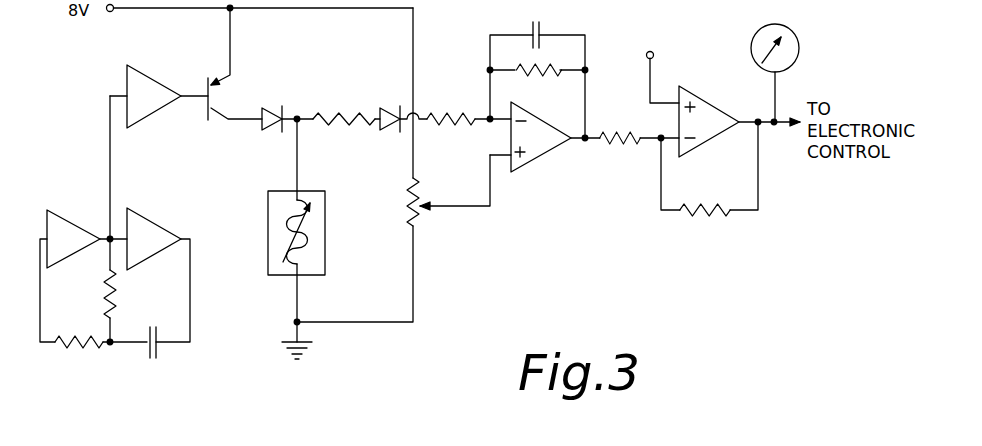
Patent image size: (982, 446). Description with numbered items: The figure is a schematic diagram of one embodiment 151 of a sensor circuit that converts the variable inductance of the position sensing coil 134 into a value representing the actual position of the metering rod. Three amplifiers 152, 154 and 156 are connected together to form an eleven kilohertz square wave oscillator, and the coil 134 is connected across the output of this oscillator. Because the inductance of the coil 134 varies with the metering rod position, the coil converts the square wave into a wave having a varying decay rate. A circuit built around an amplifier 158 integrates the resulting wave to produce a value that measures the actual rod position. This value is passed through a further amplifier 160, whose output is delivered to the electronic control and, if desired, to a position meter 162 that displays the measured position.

The coil 134 is at (305, 240).
The embodiment of the circuit 151 is at (395, 0).
The amplifier 152 is at (146, 112).
The amplifier 154 is at (152, 232).
The amplifier 156 is at (68, 232).
The amplifier 158 is at (543, 145).
The amplifier 160 is at (713, 127).
The position meter 162 is at (799, 48).